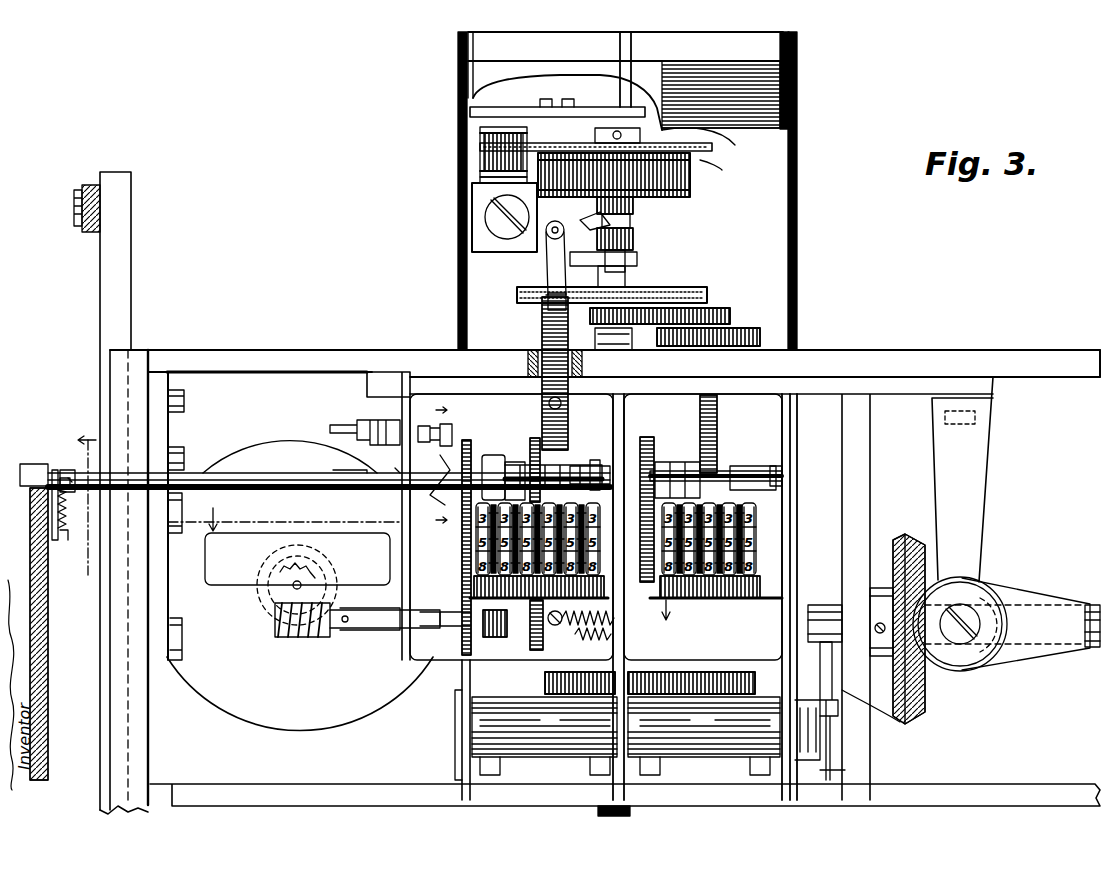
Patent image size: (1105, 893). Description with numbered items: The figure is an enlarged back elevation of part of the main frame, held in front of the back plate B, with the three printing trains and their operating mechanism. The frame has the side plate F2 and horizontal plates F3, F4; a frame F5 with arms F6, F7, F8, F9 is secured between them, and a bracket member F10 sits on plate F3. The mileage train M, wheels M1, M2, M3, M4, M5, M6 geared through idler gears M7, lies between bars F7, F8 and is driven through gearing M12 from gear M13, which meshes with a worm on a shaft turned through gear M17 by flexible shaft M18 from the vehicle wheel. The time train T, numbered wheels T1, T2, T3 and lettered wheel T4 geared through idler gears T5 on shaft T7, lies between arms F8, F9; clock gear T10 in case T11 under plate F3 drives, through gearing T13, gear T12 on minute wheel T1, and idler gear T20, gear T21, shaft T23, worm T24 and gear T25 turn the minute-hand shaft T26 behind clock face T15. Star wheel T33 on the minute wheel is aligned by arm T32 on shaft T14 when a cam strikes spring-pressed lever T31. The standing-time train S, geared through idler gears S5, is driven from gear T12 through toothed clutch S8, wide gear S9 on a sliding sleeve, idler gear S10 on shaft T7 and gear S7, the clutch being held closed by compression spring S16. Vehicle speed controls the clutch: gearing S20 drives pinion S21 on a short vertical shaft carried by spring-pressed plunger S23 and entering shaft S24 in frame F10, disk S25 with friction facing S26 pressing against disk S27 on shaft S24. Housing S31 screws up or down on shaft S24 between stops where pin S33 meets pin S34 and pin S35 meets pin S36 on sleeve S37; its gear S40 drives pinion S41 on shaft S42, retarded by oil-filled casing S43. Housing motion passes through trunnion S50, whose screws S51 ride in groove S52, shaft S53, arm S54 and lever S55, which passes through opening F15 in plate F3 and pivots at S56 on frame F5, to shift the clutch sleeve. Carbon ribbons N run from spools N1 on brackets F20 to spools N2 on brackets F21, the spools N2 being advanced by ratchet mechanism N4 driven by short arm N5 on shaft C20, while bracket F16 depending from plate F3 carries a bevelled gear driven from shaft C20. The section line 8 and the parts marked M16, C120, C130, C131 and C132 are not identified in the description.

The frame post F2 is at (142, 352).
The frame side plate F3 is at (950, 375).
The frame base F4 is at (198, 792).
The frame top plate F5 is at (857, 385).
The frame partition F6 is at (844, 438).
The frame partition F7 is at (798, 432).
The frame partition F8 is at (621, 414).
The frame partition F9 is at (404, 368).
The upper frame post F10 is at (466, 165).
The frame bearing posts F15 is at (528, 362).
The frame bracket F16 is at (966, 468).
The upper frame post F20 is at (799, 102).
The lower frame bracket F21 is at (462, 736).
The drum N is at (625, 394).
The drum flange N1 is at (460, 42).
The drum support N2 is at (470, 760).
The lever N4 is at (844, 668).
The block N5 is at (838, 632).
The shaft S is at (586, 468).
The spring S5 is at (588, 637).
The shaft member S7 is at (444, 688).
The shaft member S8 is at (472, 628).
The gear S9 is at (547, 636).
The shaft member S10 is at (482, 662).
The shaft member S16 is at (656, 620).
The gear S20 is at (730, 316).
The gear hub S21 is at (614, 347).
The gear S23 is at (708, 347).
The bracket S24 is at (637, 262).
The shaft S25 is at (730, 302).
The rack bar S26 is at (722, 300).
The toothed bar S27 is at (707, 294).
The large gear S31 is at (690, 178).
The gear S33 is at (634, 236).
The shaft collar S34 is at (626, 254).
The lever S35 is at (704, 142).
The bar S36 is at (596, 136).
The roller S37 is at (640, 128).
The spring S40 is at (722, 170).
The spring S41 is at (480, 147).
The coil S42 is at (480, 130).
The cam box S43 is at (488, 194).
The lever S50 is at (590, 222).
The pawl S51 is at (632, 220).
The ratchet S52 is at (634, 206).
The pivot S53 is at (546, 232).
The lever arm S54 is at (548, 260).
The rack S55 is at (542, 327).
The pivot pin S56 is at (562, 400).
The totalizer wheels T is at (518, 500).
The wheel member T1 is at (466, 556).
The wheel member T2 is at (470, 570).
The wheel member T3 is at (475, 585).
The hub T4 is at (516, 462).
The gear T5 is at (496, 637).
The shaft member T7 is at (442, 583).
The transfer gear T10 is at (535, 438).
The post T11 is at (480, 692).
The shaft member T12 is at (446, 546).
The gear T13 is at (468, 440).
The plate T14 is at (316, 460).
The arc guide T15 is at (270, 448).
The shaft T20 is at (425, 626).
The arc segment T21 is at (458, 640).
The shaft sleeve T23 is at (445, 628).
The worm T24 is at (275, 620).
The worm wheel T25 is at (277, 594).
The housing T26 is at (288, 585).
The spring T31 is at (70, 540).
The knob T32 is at (442, 484).
The link T33 is at (445, 522).
The crank handle B is at (30, 528).
The multiplier wheels M is at (770, 522).
The wheel member M1 is at (675, 620).
The wheel member M2 is at (690, 618).
The wheel member M3 is at (715, 618).
The wheel member M4 is at (740, 618).
The wheel member M5 is at (762, 561).
The wheel member M6 is at (762, 576).
The wheel member M7 is at (762, 592).
The gear M12 is at (702, 443).
The rack M13 is at (757, 380).
The lever M16 is at (860, 725).
The rack M17 is at (600, 700).
The bracket M18 is at (630, 808).
The link C20 is at (840, 602).
The handle end C120 is at (1092, 605).
The bevel gear C130 is at (912, 522).
The hub C131 is at (962, 671).
The crank arm C132 is at (1042, 650).
The section line 8 is at (87, 505).